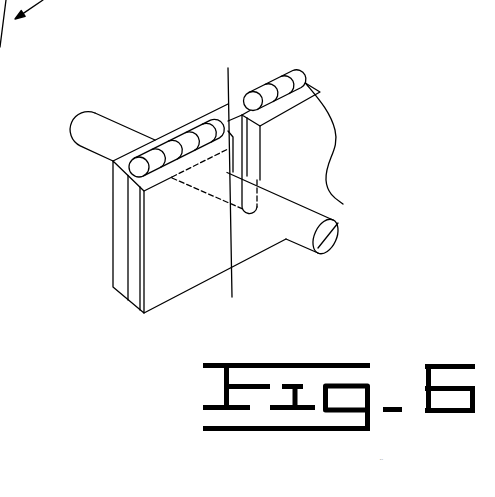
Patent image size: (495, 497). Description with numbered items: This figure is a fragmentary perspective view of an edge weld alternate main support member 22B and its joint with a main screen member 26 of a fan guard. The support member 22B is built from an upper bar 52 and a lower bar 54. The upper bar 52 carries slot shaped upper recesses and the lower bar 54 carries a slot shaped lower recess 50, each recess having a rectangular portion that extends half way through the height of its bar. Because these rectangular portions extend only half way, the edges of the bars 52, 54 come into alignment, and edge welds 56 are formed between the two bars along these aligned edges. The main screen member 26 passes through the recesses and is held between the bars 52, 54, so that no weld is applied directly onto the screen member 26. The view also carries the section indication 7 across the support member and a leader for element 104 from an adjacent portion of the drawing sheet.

The section line 7- 7 is at (228, 68).
The guide assembly 22B is at (396, 130).
The rod 26 is at (325, 210).
The second plate 50 is at (250, 142).
The first plate 52 is at (120, 220).
The base 54 is at (150, 287).
The rollers 56 is at (301, 77).
The arm 104 is at (0, 73).